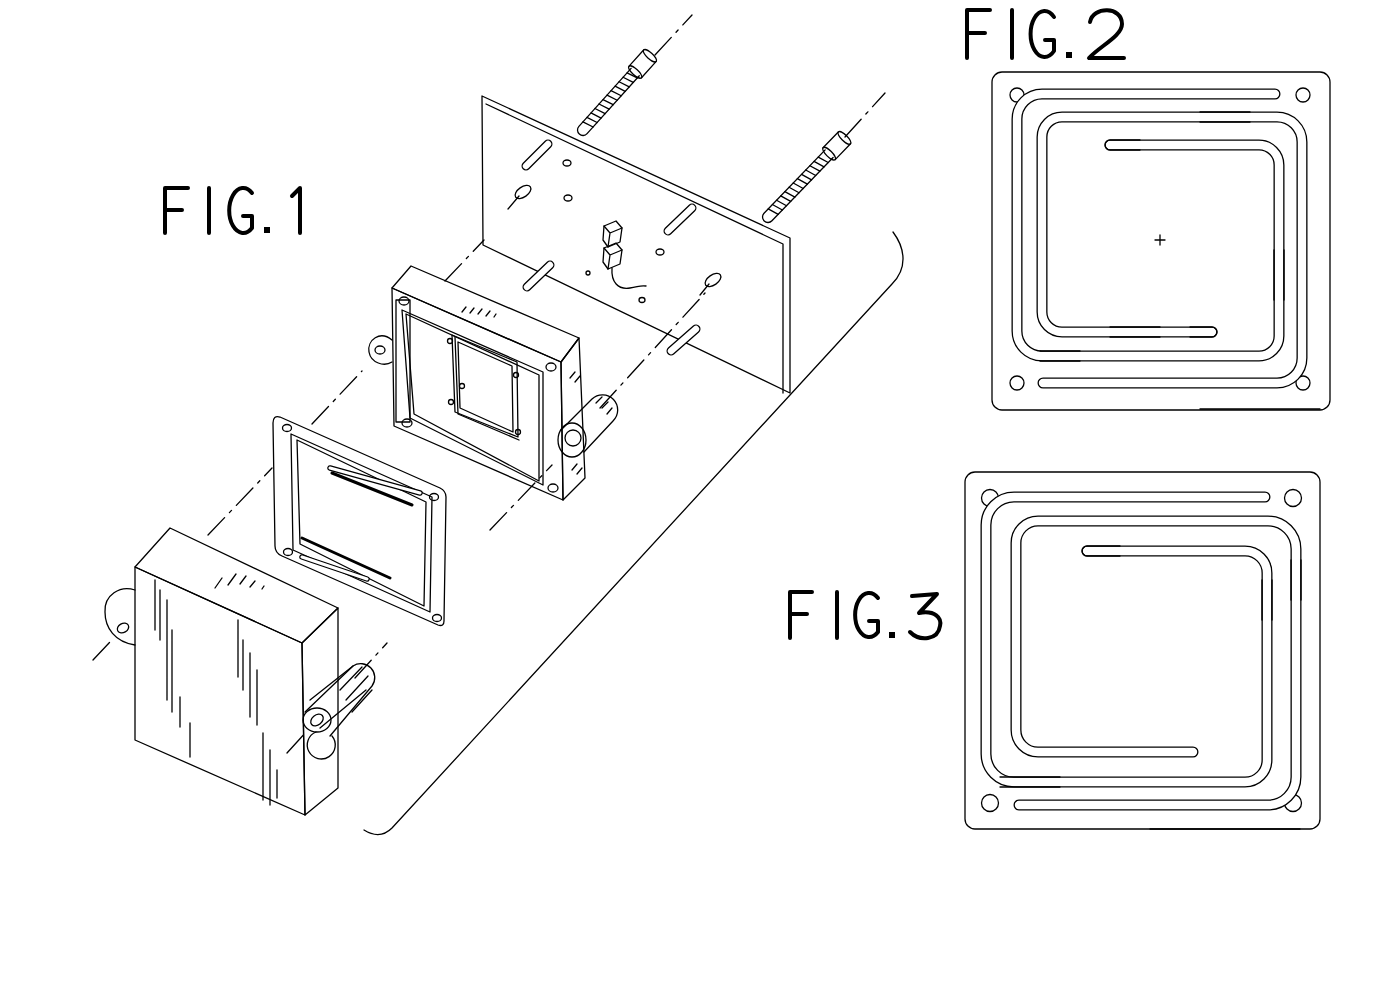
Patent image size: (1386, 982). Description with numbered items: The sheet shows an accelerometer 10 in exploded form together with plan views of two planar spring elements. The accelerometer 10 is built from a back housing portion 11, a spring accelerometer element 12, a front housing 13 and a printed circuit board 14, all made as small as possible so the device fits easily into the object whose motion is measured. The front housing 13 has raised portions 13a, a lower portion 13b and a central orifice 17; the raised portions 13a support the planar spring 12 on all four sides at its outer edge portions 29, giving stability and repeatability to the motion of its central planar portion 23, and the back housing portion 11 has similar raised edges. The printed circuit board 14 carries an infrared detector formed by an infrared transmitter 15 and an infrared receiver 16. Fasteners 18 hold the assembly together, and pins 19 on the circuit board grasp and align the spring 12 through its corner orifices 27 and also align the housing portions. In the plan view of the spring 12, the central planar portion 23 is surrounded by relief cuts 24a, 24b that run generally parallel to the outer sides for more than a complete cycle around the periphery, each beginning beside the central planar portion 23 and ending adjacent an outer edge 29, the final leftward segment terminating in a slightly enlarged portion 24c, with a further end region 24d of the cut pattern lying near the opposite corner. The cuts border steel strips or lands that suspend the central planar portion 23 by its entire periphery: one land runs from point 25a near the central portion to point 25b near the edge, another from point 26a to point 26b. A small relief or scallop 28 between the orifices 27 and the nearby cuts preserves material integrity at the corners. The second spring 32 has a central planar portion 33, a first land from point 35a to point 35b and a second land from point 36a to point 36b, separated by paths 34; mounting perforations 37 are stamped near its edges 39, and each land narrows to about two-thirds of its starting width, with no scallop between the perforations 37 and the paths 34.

In FIG. 1, the accelerometer 10 is at (431, 141).
In FIG. 1, the back housing portion 11 is at (337, 778).
In FIG. 1, the spring accelerometer element 12 is at (447, 605).
In FIG. 2, the spring accelerometer element 12 is at (1331, 153).
In FIG. 1, the front housing 13 is at (580, 480).
In FIG. 1, the raised portions 13a is at (402, 410).
In FIG. 1, the lower portion 13b is at (513, 450).
In FIG. 1, the printed circuit board 14 is at (767, 382).
In FIG. 1, the infrared transmitter 15 is at (610, 220).
In FIG. 1, the infrared receiver 16 is at (646, 283).
In FIG. 1, the central orifice 17 is at (482, 357).
In FIG. 1, the fasteners 18 is at (645, 70).
In FIG. 1, the pins 19 is at (535, 225).
In FIG. 2, the central planar portion 23 is at (1132, 240).
In FIG. 2, the relief cut 24a is at (1133, 327).
In FIG. 2, the relief cut 24b is at (1275, 278).
In FIG. 2, the enlarged portion 24c is at (1040, 386).
In FIG. 2, the channel end 24d is at (1273, 89).
In FIG. 2, the point 25a is at (1213, 329).
In FIG. 2, the point 25b is at (1257, 108).
In FIG. 2, the point 26a is at (1102, 144).
In FIG. 2, the point 26b is at (1053, 370).
In FIG. 2, the orifices 27 is at (1311, 96).
In FIG. 2, the relief 28 is at (1038, 98).
In FIG. 2, the outer edge portions 29 is at (1332, 352).
In FIG. 3, the spring 32 is at (1322, 505).
In FIG. 3, the central planar portion 33 is at (1158, 643).
In FIG. 3, the paths 34 is at (1267, 597).
In FIG. 3, the point 35a is at (1188, 765).
In FIG. 3, the point 35b is at (1248, 505).
In FIG. 3, the point 36a is at (1102, 540).
In FIG. 3, the point 36b is at (1023, 792).
In FIG. 3, the mounting perforations 37 is at (1300, 800).
In FIG. 3, the edges 39 is at (1255, 820).